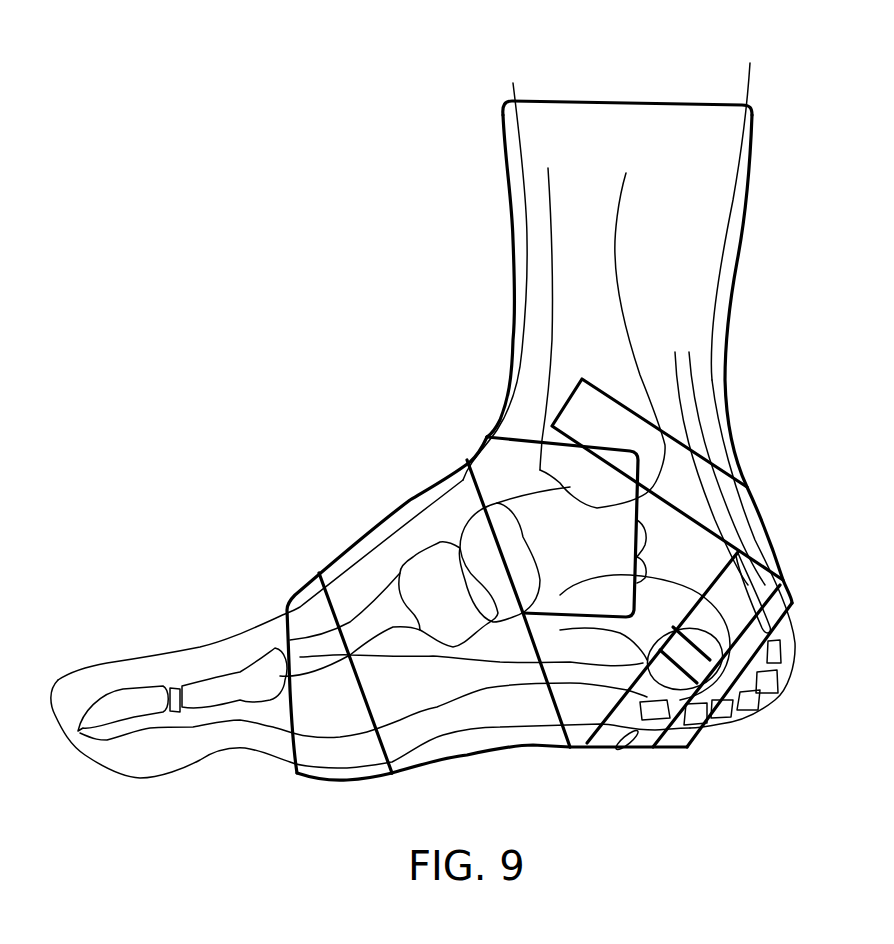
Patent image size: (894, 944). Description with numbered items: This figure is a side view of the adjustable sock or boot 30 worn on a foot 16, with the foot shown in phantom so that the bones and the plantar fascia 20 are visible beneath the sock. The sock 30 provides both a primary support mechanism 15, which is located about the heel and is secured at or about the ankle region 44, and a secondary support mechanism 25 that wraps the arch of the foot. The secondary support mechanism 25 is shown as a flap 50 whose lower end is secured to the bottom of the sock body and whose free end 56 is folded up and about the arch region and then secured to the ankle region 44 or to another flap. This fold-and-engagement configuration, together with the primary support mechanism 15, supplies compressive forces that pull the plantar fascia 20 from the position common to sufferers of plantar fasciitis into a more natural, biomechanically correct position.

The primary support mechanism 15 is at (793, 545).
The foot 16 is at (202, 645).
The plantar fascia 20 is at (440, 712).
The secondary support mechanism 25 is at (380, 490).
The sock or boot 30 is at (485, 350).
The ankle region 44 is at (653, 522).
The flap 50 is at (498, 457).
The free end of the flap 56 is at (350, 576).